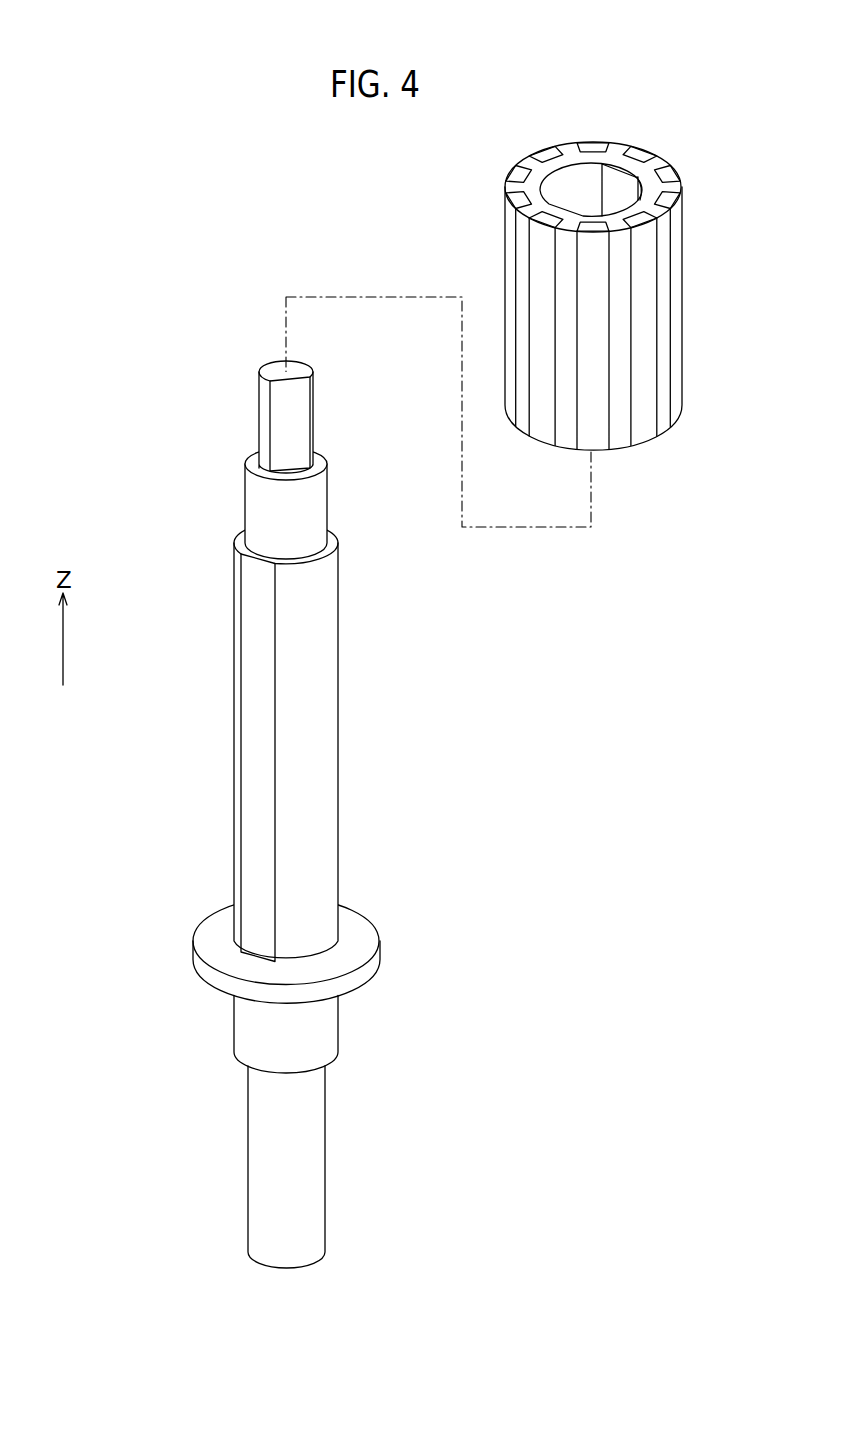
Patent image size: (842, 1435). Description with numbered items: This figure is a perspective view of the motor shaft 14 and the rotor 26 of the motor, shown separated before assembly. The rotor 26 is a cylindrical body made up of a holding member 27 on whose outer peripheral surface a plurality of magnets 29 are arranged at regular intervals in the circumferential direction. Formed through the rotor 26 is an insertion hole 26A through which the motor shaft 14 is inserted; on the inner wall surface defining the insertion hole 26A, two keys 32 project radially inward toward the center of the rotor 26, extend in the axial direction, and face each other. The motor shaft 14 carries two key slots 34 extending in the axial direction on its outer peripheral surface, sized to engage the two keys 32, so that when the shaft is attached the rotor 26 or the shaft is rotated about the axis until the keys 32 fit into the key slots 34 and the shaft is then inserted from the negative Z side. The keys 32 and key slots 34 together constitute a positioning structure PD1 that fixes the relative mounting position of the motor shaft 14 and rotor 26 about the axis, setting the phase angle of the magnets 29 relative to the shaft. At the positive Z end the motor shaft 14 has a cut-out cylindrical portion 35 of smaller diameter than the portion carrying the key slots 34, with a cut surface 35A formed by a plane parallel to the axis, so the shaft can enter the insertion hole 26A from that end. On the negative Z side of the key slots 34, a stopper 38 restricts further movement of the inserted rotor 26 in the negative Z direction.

The motor shaft 14 is at (302, 803).
The rotor 26 is at (618, 358).
The insertion hole 26A is at (620, 207).
The holding member 27 is at (553, 167).
The magnets 29 is at (643, 293).
The keys 32 is at (616, 192).
The key slots 34 is at (263, 567).
The cut-out cylindrical portion 35 is at (251, 406).
The cut surface 35A is at (273, 418).
The stopper 38 is at (245, 961).
The positioning structure PD1 is at (530, 600).